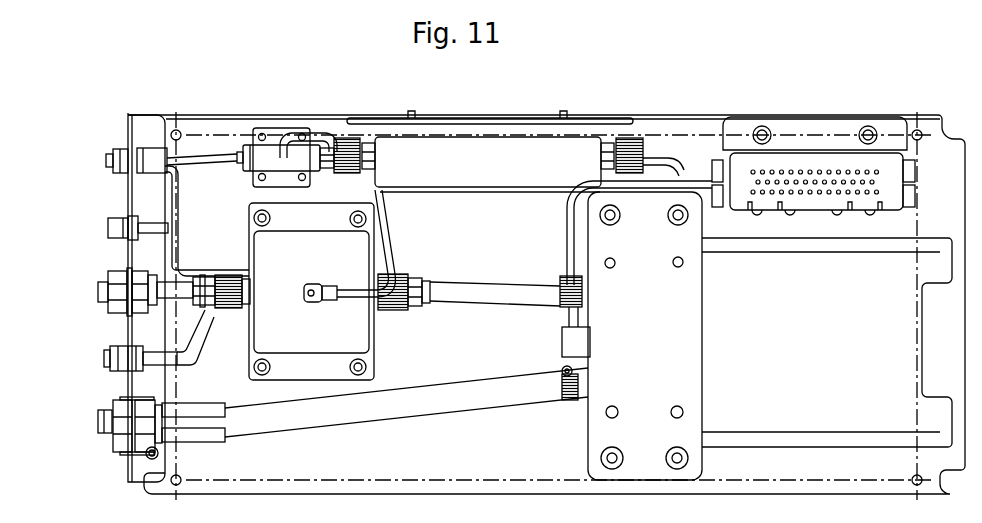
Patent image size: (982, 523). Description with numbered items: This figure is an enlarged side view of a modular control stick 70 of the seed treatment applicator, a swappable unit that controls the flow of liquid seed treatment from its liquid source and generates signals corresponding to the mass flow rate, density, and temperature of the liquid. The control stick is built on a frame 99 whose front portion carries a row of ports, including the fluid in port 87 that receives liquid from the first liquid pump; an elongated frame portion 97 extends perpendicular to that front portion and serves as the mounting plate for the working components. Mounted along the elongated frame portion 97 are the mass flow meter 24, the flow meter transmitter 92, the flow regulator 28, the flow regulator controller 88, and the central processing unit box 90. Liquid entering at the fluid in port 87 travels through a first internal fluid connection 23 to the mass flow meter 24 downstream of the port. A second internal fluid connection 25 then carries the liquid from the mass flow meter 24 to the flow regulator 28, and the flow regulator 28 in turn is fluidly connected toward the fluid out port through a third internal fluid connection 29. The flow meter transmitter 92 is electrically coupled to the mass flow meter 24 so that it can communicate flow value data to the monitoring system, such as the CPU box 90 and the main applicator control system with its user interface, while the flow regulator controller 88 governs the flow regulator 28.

The modular control stick 70 is at (148, 108).
The flow regulator controller 88 is at (278, 145).
The frame 99 is at (680, 117).
The flow meter transmitter 92 is at (777, 160).
The central processing unit box 90 is at (507, 172).
The flow regulator 28 is at (297, 279).
The third internal fluid connection 29 is at (189, 300).
The second internal fluid connection 25 is at (466, 306).
The mass flow meter 24 is at (659, 350).
The first internal fluid connection 23 is at (460, 408).
The elongated frame portion 97 is at (372, 459).
The fluid in port 87 is at (113, 438).